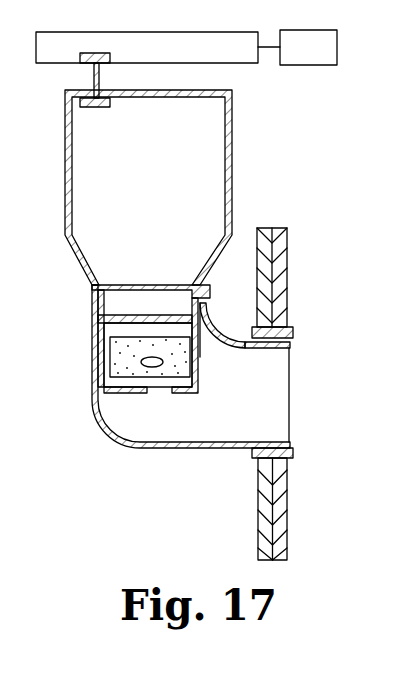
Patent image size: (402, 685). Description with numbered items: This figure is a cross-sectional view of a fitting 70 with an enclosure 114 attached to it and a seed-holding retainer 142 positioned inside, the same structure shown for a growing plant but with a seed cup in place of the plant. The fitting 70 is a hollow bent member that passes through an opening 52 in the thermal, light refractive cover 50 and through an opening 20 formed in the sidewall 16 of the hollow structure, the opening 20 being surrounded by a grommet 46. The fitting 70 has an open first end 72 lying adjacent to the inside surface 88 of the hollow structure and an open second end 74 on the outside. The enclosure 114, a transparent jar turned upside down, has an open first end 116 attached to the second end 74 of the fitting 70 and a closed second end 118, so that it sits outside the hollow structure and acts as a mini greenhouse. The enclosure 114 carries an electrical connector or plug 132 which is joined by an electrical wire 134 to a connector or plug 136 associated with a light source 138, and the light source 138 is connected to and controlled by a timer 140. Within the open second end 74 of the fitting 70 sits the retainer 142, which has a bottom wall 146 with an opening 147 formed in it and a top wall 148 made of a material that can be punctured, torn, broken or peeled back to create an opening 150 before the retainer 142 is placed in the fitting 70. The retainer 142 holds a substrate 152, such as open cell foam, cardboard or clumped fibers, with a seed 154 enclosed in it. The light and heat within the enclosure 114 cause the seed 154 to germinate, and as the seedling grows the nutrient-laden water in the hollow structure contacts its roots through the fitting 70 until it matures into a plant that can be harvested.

The light source 138 is at (187, 58).
The timer 140 is at (292, 58).
The electrical wire 134 is at (93, 80).
The electrical connector or plug 136 is at (102, 66).
The electrical connector or plug 132 is at (84, 108).
The closed second end 118 is at (214, 93).
The enclosure 114 is at (234, 158).
The fitting 70 is at (66, 340).
The opening 20 is at (290, 447).
The top wall 148 is at (125, 315).
The open first end 116 is at (112, 300).
The opening 150 is at (155, 315).
The opening 147 is at (198, 386).
The retainer 142 is at (202, 359).
The seed 154 is at (152, 368).
The substrate 152 is at (182, 396).
The bottom wall 146 is at (105, 396).
The second end 74 is at (201, 293).
The first end 72 is at (290, 358).
The sidewall 16 is at (280, 270).
The thermal, light refractive cover 50 is at (262, 298).
The inside surface 88 is at (288, 318).
The grommet 46 is at (293, 458).
The opening 52 is at (247, 448).